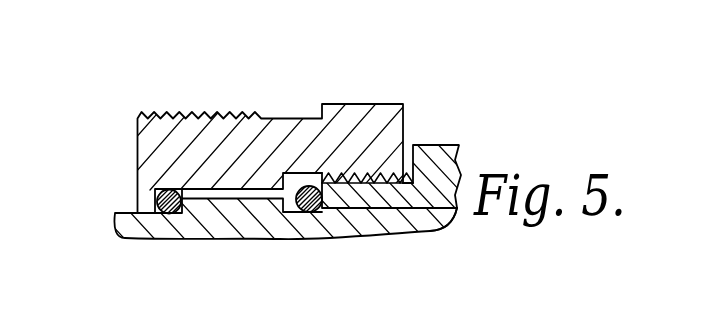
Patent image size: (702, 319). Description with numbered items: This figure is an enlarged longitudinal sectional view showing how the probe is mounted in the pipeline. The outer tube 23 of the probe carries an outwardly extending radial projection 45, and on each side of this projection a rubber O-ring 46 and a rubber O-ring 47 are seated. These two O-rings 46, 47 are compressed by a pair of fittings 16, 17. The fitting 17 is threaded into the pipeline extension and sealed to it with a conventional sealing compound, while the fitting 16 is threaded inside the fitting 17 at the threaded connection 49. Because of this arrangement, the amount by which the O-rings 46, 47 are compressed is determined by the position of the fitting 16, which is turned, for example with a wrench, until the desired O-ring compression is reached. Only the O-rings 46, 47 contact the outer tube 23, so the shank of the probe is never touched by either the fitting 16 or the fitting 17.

The fitting 16 is at (440, 145).
The fitting 17 is at (348, 104).
The outer tube 23 is at (438, 236).
The outwardly extending radial projection 45 is at (244, 238).
The O-ring 46 is at (155, 191).
The O-ring 47 is at (312, 212).
The threaded connection 49 is at (368, 172).